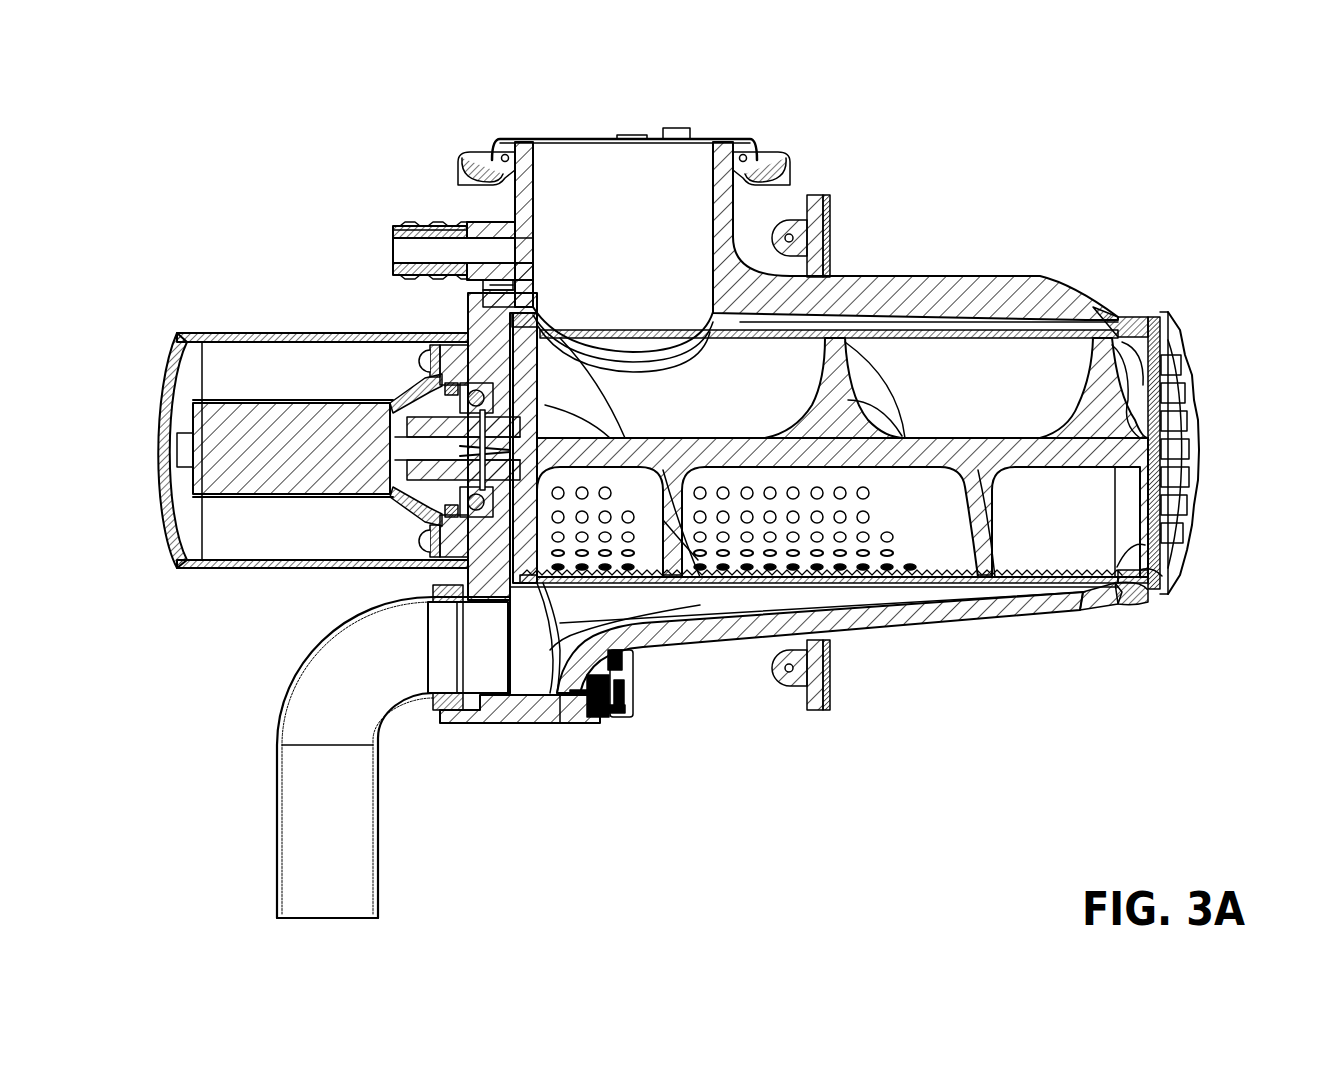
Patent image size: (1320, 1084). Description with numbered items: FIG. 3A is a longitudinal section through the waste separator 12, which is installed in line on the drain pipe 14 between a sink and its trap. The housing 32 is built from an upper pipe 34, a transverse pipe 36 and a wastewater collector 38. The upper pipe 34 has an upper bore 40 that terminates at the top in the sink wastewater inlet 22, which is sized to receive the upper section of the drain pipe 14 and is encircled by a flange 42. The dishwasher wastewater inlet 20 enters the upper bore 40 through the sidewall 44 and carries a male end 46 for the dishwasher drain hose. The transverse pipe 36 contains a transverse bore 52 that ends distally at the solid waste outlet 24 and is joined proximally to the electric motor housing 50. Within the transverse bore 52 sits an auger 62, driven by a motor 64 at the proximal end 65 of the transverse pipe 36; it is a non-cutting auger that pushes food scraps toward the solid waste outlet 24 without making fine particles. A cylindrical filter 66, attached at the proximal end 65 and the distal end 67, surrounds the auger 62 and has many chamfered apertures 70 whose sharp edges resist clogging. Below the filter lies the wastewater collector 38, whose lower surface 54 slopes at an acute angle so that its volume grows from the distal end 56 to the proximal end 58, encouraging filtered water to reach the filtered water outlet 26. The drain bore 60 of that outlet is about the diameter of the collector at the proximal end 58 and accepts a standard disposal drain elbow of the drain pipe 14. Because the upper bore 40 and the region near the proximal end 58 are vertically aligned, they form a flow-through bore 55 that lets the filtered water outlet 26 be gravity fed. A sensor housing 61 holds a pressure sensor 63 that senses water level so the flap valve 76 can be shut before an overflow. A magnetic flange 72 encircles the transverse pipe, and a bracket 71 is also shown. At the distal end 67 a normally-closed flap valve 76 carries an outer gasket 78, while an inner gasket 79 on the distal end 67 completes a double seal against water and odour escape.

The waste separator 12 is at (1048, 145).
The drain pipe 14 is at (380, 867).
The dishwasher wastewater inlet 20 is at (385, 248).
The sink wastewater inlet 22 is at (592, 133).
The solid waste outlet 24 is at (1090, 502).
The filtered water outlet 26 is at (500, 742).
The housing 32 is at (918, 258).
The upper pipe 34 is at (727, 210).
The transverse pipe 36 is at (1028, 340).
The wastewater collector 38 is at (737, 605).
The upper bore 40 is at (675, 178).
The flange 42 is at (743, 150).
The sidewall 44 is at (485, 286).
The male end 46 is at (405, 226).
The electric motor housing 50 is at (300, 333).
The transverse bore 52 is at (977, 342).
The lower surface 54 is at (962, 608).
The flow-through bore 55 is at (598, 522).
The distal end 56 is at (1087, 602).
The proximal end 58 is at (533, 699).
The drain bore 60 is at (475, 660).
The sensor housing 61 is at (586, 717).
The auger 62 is at (1032, 594).
The pressure sensor 63 is at (612, 720).
The motor 64 is at (240, 470).
The proximal end 65 is at (392, 500).
The cylindrical filter 66 is at (1067, 340).
The distal end 67 is at (1170, 562).
The chamfered apertures 70 is at (902, 584).
The gasket 71 is at (858, 276).
The magnetic flange 72 is at (815, 238).
The flap valve 76 is at (1185, 440).
The outer gasket 78 is at (1152, 590).
The inner gasket 79 is at (1128, 604).